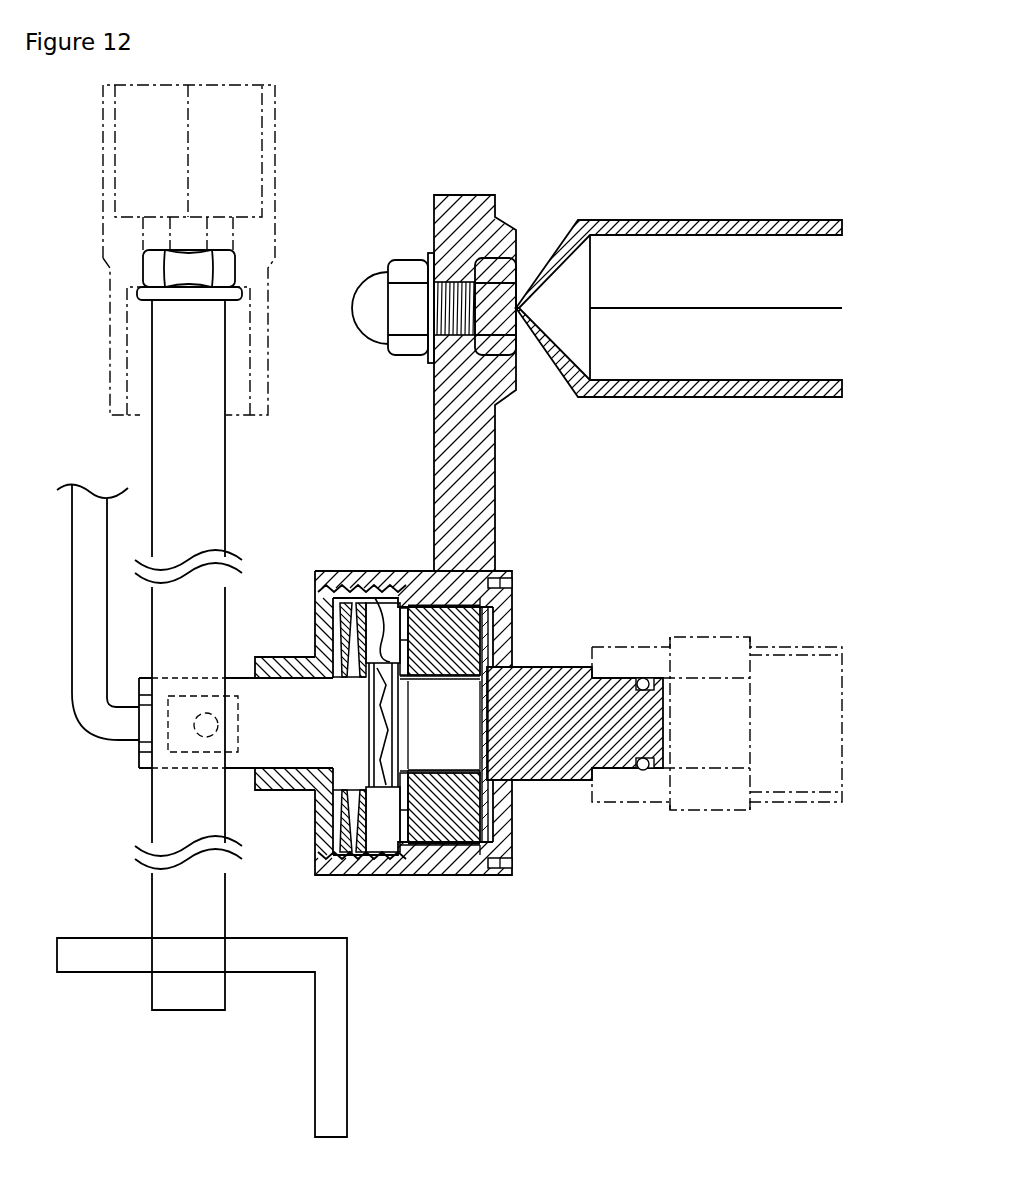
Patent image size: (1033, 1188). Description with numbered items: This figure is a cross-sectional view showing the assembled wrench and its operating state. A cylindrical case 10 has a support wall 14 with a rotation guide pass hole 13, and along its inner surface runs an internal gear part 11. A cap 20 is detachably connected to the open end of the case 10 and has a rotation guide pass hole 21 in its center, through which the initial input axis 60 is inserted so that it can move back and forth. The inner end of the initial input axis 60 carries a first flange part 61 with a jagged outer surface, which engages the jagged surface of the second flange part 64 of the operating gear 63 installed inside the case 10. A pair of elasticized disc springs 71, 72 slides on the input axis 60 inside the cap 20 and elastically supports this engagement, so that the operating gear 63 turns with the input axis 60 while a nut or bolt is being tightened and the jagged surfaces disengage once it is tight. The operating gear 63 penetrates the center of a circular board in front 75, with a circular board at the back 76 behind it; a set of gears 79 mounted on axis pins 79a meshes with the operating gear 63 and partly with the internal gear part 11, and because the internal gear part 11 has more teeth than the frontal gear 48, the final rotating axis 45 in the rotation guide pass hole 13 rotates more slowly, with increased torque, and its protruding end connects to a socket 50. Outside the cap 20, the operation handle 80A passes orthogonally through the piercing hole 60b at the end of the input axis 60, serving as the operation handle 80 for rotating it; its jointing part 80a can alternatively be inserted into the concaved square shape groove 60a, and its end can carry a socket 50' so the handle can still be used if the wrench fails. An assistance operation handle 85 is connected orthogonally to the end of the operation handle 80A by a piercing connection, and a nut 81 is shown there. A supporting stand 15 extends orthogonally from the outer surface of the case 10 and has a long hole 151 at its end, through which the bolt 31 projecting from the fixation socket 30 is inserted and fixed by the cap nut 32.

The cylindrical case 10 is at (403, 870).
The internal gear part 11 is at (424, 604).
The rotation guide pass hole 13 is at (502, 665).
The support wall 14 is at (503, 608).
The supporting stand 15 is at (472, 420).
The long hole 151 is at (455, 275).
The cap 20 is at (325, 808).
The rotation guide pass hole 21 is at (290, 775).
The fixation socket 30 is at (650, 228).
The bolt 31 is at (470, 300).
The cap nut 32 is at (410, 272).
The final rotating axis 45 is at (548, 743).
The frontal gear 48 is at (452, 605).
The socket 50 is at (717, 751).
The socket 50' is at (212, 250).
The initial input axis 60 is at (277, 698).
The concaved square shape groove 60a is at (148, 760).
The piercing hole 60b is at (227, 684).
The first flange part 61 is at (352, 605).
The operating gear 63 is at (475, 850).
The second flange part 64 is at (376, 600).
The disc spring 71 is at (342, 855).
The disc spring 72 is at (358, 852).
The circular board in front 75 is at (400, 660).
The circular board at the back 76 is at (485, 630).
The set of gears 79 is at (420, 847).
The axis pin 79a is at (390, 860).
The operation handle 80 is at (82, 624).
The jointing part 80a is at (147, 743).
The operation handle 80A is at (205, 518).
The nut 81 is at (228, 272).
The assistance operation handle 85 is at (330, 988).